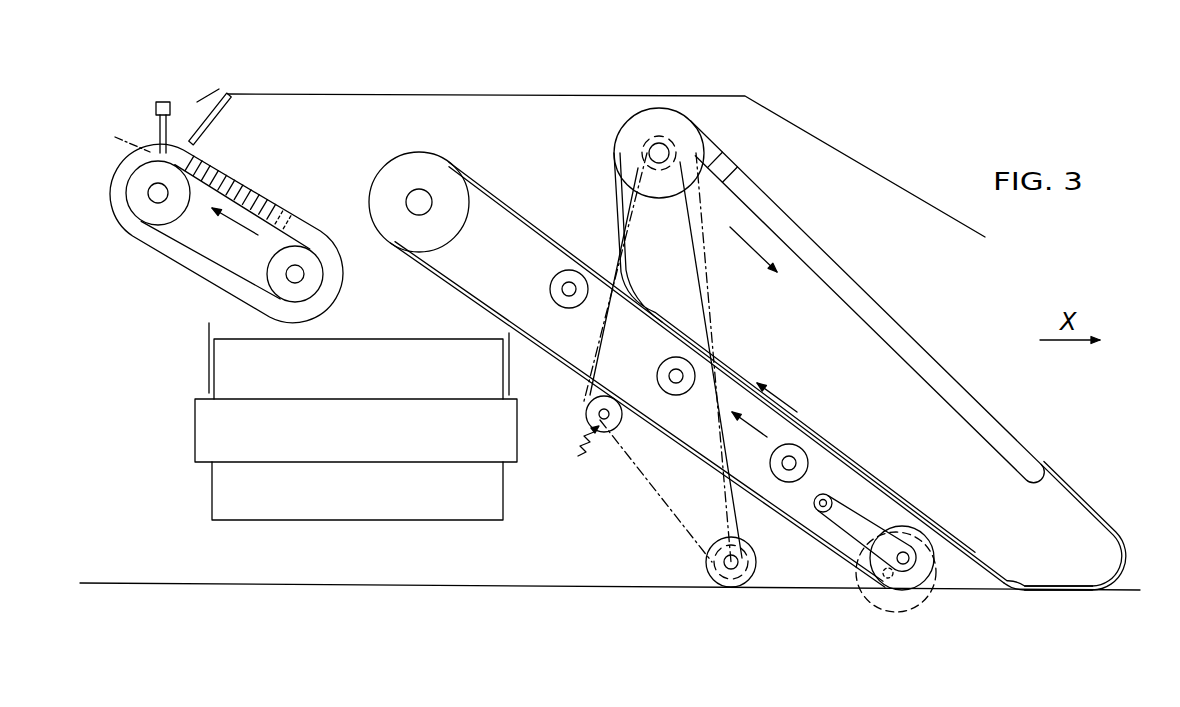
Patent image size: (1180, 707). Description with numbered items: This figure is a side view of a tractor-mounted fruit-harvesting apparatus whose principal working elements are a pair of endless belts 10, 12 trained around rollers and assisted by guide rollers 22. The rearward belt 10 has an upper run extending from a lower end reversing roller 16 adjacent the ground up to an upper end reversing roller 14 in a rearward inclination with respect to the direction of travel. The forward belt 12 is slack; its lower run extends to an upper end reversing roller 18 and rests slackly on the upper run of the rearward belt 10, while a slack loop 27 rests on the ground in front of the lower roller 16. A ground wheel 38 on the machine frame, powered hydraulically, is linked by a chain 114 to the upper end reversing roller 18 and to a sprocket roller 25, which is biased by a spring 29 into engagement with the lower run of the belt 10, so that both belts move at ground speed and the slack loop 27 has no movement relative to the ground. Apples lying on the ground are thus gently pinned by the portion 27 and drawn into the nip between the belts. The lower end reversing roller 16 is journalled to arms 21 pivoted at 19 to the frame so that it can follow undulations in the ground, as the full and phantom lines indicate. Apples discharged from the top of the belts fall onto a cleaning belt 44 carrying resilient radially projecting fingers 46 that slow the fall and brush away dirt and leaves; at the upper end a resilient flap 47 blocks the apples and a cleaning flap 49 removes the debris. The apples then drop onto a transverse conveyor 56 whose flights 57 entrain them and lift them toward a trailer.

The rearward belt 10 is at (556, 243).
The forward belt 12 is at (1072, 488).
The upper end reversing roller 14 is at (445, 188).
The lower end reversing roller 16 is at (888, 573).
The upper end reversing roller 18 is at (632, 131).
The pivot 19 is at (830, 496).
The arms 21 is at (862, 508).
The guide rollers 22 is at (569, 300).
The sprocket roller 25 is at (592, 414).
The slack loop 27 is at (1028, 582).
The spring 29 is at (578, 460).
The ground wheel 38 is at (712, 580).
The cleaning belt 44 is at (178, 268).
The resilient fingers 46 is at (258, 205).
The resilient flap 47 is at (200, 142).
The cleaning flap 49 is at (150, 130).
The transverse conveyor 56 is at (362, 393).
The flights 57 is at (230, 483).
The chain 114 is at (706, 313).